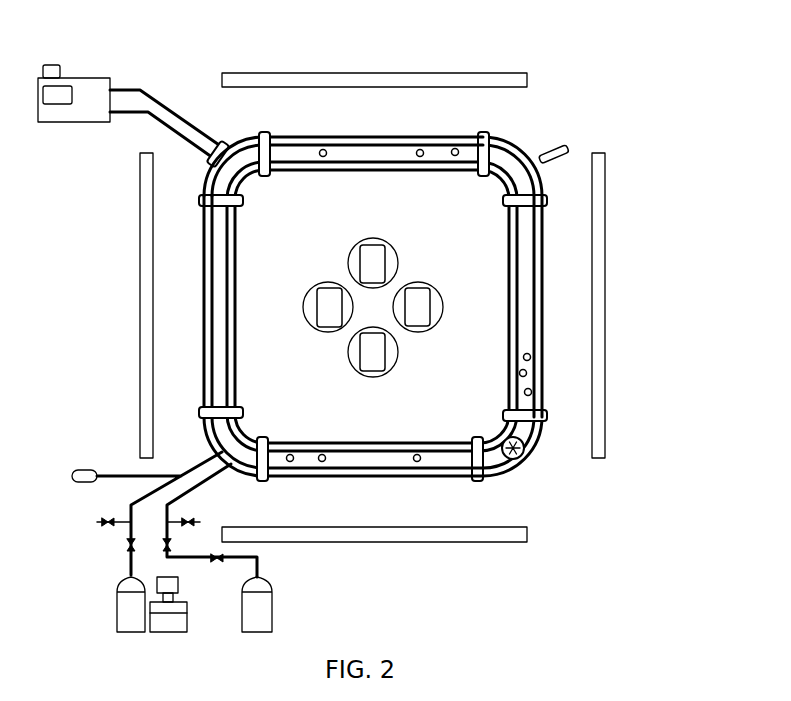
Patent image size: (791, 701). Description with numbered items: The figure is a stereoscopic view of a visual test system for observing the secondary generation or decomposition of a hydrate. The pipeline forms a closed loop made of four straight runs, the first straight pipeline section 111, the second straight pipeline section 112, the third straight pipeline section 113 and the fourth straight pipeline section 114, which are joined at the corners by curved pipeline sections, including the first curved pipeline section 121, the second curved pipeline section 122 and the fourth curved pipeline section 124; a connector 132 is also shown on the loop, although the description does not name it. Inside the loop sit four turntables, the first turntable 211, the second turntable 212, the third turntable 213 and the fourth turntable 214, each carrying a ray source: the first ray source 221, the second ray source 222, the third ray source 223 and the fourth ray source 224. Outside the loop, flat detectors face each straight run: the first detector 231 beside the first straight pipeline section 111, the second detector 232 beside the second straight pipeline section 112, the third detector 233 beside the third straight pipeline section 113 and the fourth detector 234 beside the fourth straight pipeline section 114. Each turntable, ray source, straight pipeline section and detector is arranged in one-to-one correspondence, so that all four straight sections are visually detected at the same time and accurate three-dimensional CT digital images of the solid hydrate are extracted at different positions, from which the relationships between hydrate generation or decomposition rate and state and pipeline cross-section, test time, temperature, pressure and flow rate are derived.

The first straight pipeline section 111 is at (213, 364).
The second straight pipeline section 112 is at (317, 147).
The third straight pipeline section 113 is at (530, 252).
The fourth straight pipeline section 114 is at (456, 466).
The first curved pipeline section 121 is at (207, 437).
The second curved pipeline section 122 is at (236, 152).
The fourth curved pipeline section 124 is at (496, 461).
The gas inlet connector 132 is at (540, 157).
The first turntable 211 is at (318, 283).
The second turntable 212 is at (358, 243).
The third turntable 213 is at (434, 297).
The fourth turntable 214 is at (357, 368).
The first ray source 221 is at (325, 316).
The second ray source 222 is at (376, 255).
The third ray source 223 is at (424, 318).
The fourth ray source 224 is at (378, 373).
The first detector 231 is at (140, 216).
The second detector 232 is at (555, 55).
The third detector 233 is at (598, 270).
The fourth detector 234 is at (292, 536).